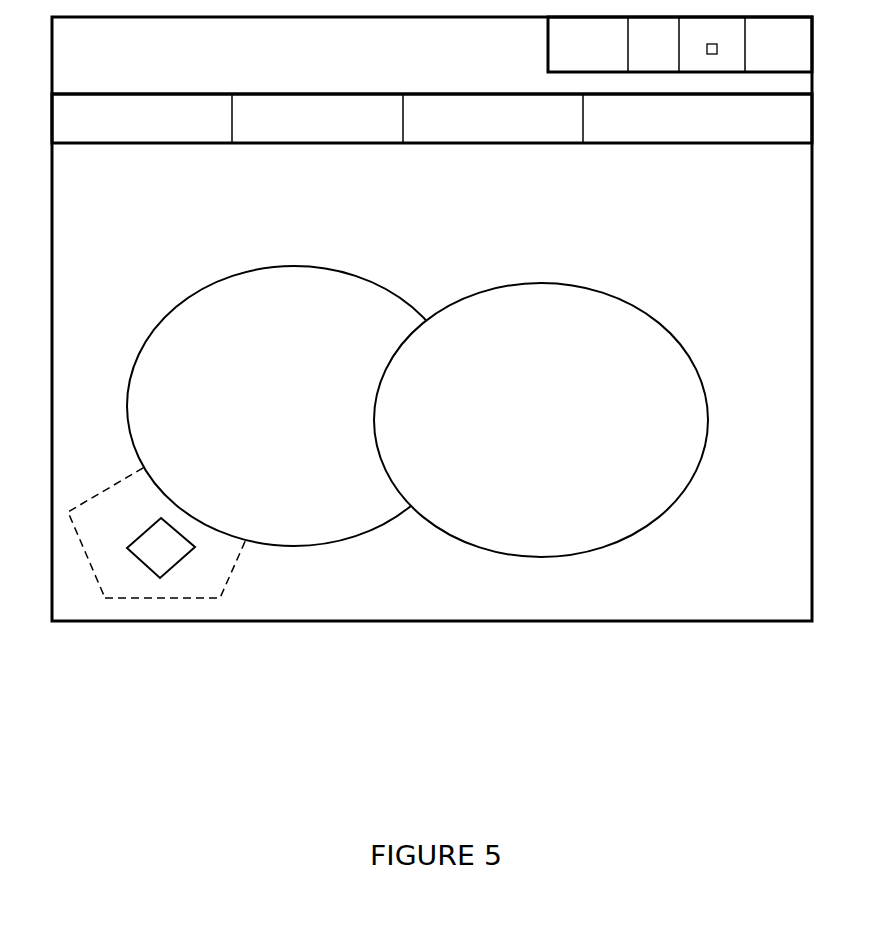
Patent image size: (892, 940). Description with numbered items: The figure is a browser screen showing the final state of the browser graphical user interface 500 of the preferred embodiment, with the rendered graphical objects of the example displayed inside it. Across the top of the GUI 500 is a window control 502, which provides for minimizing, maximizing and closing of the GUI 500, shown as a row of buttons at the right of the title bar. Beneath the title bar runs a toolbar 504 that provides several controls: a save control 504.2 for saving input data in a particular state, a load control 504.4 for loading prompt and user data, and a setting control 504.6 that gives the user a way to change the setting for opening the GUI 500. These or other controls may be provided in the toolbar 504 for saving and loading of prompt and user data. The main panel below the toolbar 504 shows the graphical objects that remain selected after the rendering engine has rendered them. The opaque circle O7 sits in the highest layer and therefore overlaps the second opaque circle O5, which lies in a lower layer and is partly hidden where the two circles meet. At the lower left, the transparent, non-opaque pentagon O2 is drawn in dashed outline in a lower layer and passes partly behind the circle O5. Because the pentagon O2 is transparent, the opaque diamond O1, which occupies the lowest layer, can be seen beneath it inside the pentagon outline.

The browser graphical user interface 500 is at (432, 59).
The window control 502 is at (680, 44).
The toolbar 504 is at (432, 118).
The save 504.2 is at (317, 118).
The load 504.4 is at (499, 118).
The setting 504.6 is at (685, 114).
The opaque circle O5 is at (266, 266).
The opaque circle O7 is at (660, 312).
The transparent pentagon O2 is at (121, 482).
The opaque diamond O1 is at (190, 557).